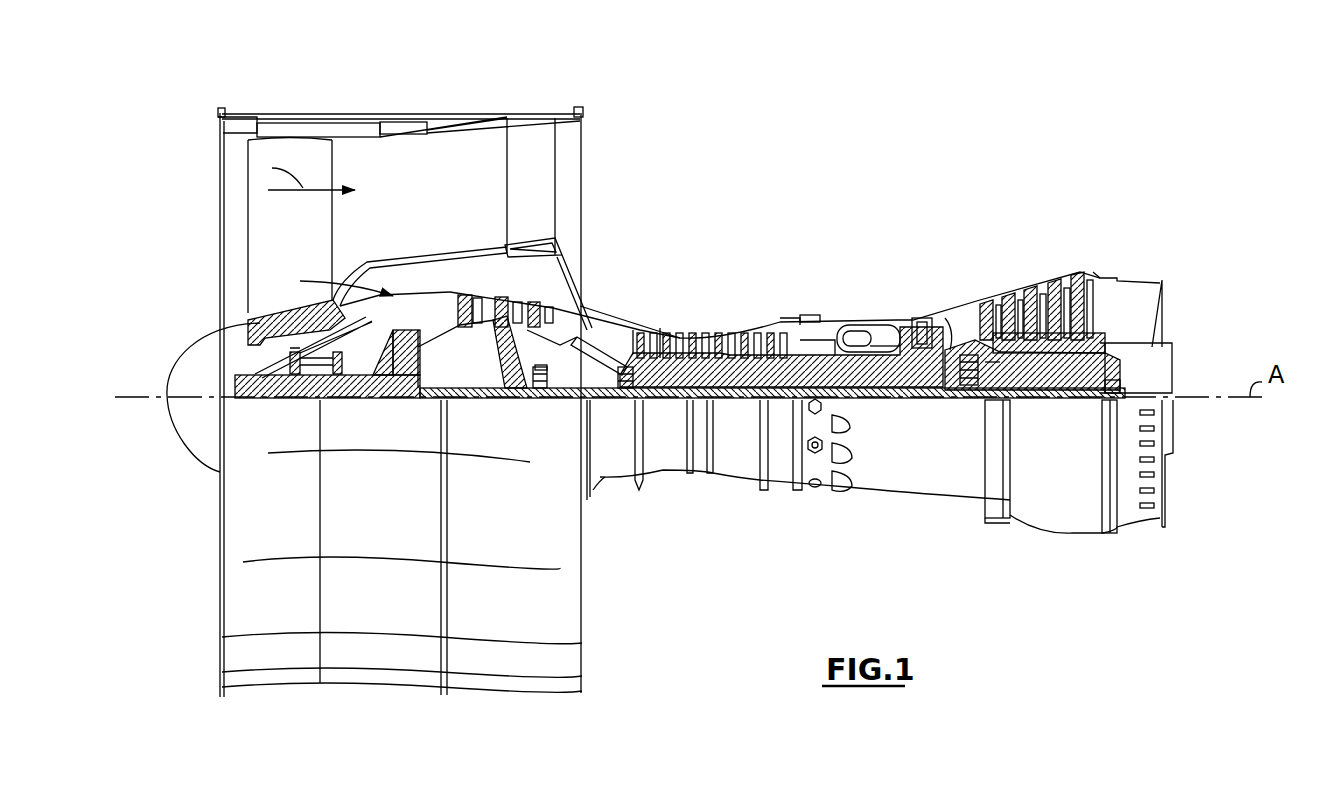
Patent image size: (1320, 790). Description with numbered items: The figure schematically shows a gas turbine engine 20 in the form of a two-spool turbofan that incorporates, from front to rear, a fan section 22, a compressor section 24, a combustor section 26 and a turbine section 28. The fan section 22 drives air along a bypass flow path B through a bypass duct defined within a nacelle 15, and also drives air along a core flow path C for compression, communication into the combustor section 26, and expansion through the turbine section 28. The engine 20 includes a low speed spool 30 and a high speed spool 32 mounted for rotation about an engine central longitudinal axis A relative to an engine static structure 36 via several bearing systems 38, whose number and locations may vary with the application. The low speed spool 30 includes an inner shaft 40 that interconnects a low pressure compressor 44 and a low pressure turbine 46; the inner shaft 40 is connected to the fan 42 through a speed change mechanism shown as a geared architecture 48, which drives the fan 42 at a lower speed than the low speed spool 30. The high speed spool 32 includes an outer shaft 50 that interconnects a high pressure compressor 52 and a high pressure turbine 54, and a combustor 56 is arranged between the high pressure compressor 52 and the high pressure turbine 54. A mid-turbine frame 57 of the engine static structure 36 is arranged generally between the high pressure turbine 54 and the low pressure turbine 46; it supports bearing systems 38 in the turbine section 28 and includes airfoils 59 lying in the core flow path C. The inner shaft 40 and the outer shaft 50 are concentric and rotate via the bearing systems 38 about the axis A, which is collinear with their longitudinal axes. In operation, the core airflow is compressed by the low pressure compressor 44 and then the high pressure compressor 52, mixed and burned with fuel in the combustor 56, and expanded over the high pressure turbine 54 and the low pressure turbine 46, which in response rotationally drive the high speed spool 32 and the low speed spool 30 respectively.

The nacelle 15 is at (403, 121).
The gas turbine engine 20 is at (865, 165).
The fan section 22 is at (330, 103).
The compressor section 24 is at (632, 305).
The combustor section 26 is at (857, 296).
The turbine section 28 is at (1008, 258).
The low speed spool 30 is at (740, 402).
The high speed spool 32 is at (783, 340).
The engine static structure 36 is at (780, 486).
The bearing systems 38 is at (542, 395).
The inner shaft 40 is at (607, 400).
The fan 42 is at (308, 246).
The low pressure compressor 44 is at (505, 320).
The low pressure turbine 46 is at (1048, 285).
The geared architecture 48 is at (407, 388).
The outer shaft 50 is at (863, 398).
The high pressure compressor 52 is at (712, 340).
The high pressure turbine 54 is at (921, 320).
The combustor 56 is at (857, 342).
The mid-turbine frame 57 is at (963, 310).
The airfoils 59 is at (1000, 366).